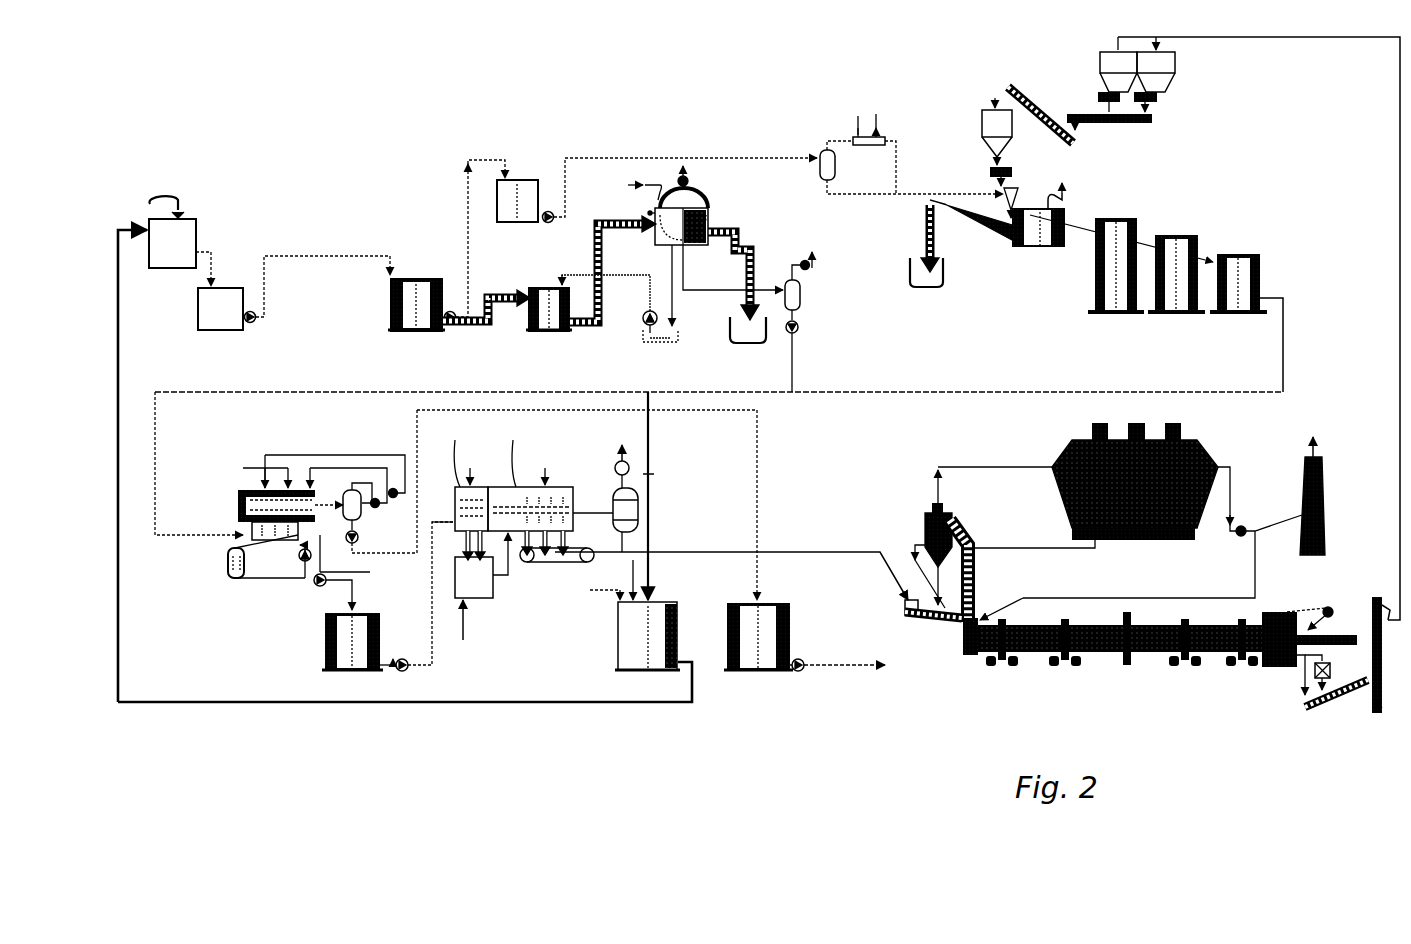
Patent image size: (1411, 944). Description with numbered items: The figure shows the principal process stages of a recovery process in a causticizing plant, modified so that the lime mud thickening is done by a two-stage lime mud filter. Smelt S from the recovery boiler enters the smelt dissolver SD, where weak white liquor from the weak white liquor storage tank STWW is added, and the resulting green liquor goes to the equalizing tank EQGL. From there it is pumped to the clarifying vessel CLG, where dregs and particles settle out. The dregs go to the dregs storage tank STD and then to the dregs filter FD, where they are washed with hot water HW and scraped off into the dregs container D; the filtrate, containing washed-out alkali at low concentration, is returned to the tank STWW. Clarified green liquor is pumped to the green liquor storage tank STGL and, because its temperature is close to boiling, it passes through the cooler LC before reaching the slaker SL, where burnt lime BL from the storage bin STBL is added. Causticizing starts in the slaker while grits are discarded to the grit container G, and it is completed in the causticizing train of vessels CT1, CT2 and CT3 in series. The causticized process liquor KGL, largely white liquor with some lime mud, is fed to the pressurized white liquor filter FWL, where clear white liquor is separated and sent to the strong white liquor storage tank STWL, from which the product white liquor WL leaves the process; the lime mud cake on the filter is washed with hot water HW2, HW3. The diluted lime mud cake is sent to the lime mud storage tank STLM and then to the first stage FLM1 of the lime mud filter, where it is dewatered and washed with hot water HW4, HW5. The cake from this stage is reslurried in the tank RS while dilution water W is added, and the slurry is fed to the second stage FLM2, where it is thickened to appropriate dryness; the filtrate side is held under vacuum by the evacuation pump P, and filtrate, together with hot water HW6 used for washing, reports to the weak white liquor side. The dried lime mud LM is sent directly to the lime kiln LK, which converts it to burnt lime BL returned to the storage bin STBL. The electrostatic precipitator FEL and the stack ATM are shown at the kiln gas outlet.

The smelt S is at (160, 201).
The smelt dissolver SD is at (180, 252).
The equalizing tank EQGL is at (291, 293).
The clarifying vessel CLG is at (446, 246).
The green liquor storage tank STGL is at (657, 190).
The dregs storage tank STD is at (588, 303).
The dregs filter FD is at (705, 254).
The hot water HW is at (609, 185).
The dregs container D is at (746, 339).
The cooler LC is at (911, 154).
The burnt lime storage bin STBL is at (976, 153).
The burnt lime BL is at (1204, 316).
The slaker SL is at (1071, 226).
The grit container G is at (920, 255).
The first causticizing vessel CT1 is at (1116, 265).
The second causticizing vessel CT2 is at (1176, 273).
The third causticizing vessel CT3 is at (1246, 323).
The causticized process liquor KGL is at (719, 378).
The pressurized white liquor filter FWL is at (316, 532).
The hot water HW2 is at (220, 465).
The hot water HW3 is at (387, 573).
The lime mud storage tank STLM is at (387, 596).
The first stage lime mud filter FLM1 is at (456, 491).
The second stage lime mud filter FLM2 is at (541, 492).
The hot water HW4 is at (475, 455).
The hot water HW5 is at (547, 455).
The reslurry tank RS is at (481, 565).
The dilution water W is at (462, 627).
The evacuation pump P is at (605, 498).
The dried lime mud LM is at (731, 564).
The weak white liquor storage tank STWW is at (635, 615).
The hot water HW6 is at (572, 589).
The strong white liquor storage tank STWL is at (764, 637).
The white liquor WL is at (856, 681).
The electrostatic precipitator FEL is at (1177, 481).
The atmosphere stack ATM is at (1311, 482).
The lime kiln LK is at (1176, 655).